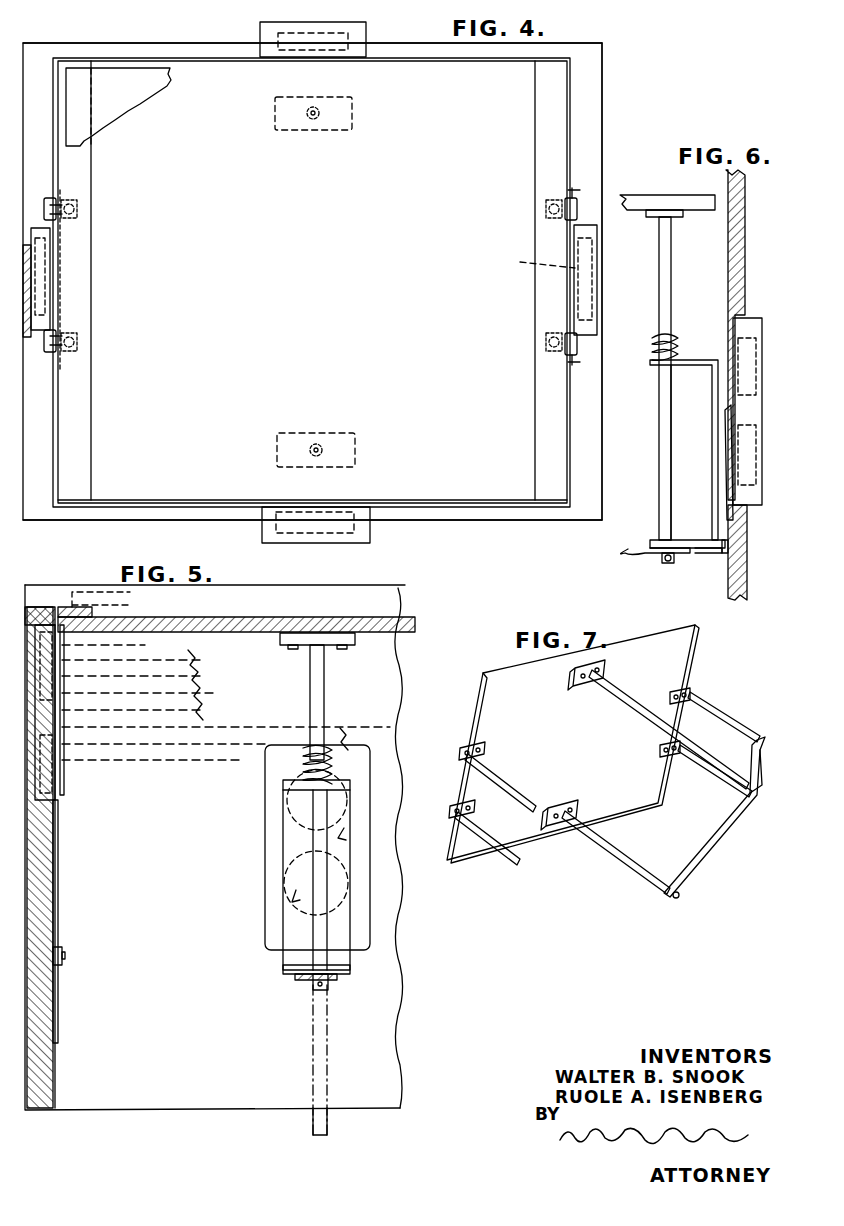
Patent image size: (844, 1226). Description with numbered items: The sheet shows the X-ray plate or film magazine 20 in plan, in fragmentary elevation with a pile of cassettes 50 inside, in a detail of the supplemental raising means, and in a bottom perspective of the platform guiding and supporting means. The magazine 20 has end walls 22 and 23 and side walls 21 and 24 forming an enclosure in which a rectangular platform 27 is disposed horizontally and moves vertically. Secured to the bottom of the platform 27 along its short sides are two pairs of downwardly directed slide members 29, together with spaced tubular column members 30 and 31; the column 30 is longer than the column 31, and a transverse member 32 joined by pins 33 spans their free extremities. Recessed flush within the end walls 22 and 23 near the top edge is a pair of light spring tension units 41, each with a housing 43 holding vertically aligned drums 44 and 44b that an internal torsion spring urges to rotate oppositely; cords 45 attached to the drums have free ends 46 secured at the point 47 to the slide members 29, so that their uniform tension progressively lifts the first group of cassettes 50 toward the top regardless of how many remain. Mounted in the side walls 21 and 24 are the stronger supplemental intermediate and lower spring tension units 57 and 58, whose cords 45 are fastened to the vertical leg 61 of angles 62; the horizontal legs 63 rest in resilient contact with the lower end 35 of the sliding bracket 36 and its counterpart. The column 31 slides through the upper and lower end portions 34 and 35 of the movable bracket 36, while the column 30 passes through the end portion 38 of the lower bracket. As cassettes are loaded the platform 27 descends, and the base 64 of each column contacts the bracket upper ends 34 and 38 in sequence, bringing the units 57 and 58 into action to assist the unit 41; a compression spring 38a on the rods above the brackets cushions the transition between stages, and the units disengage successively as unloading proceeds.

In FIG. 5, the photographic magazine 20 is at (418, 994).
In FIG. 4, the side wall 21 is at (207, 520).
In FIG. 6, the side wall 21 is at (742, 240).
In FIG. 4, the end wall 22 is at (40, 440).
In FIG. 5, the end wall 22 is at (55, 1090).
In FIG. 4, the end wall 23 is at (582, 450).
In FIG. 4, the side wall 24 is at (178, 47).
In FIG. 4, the platform 27 is at (345, 234).
In FIG. 6, the platform 27 is at (635, 202).
In FIG. 7, the platform 27 is at (682, 662).
In FIG. 5, the slide members 29 is at (58, 1010).
In FIG. 7, the slide members 29 is at (515, 800).
In FIG. 4, the tubular column member 30 is at (311, 120).
In FIG. 7, the tubular column member 30 is at (650, 715).
In FIG. 4, the tubular column member 31 is at (318, 443).
In FIG. 6, the tubular column member 31 is at (660, 470).
In FIG. 5, the tubular column member 31 is at (324, 705).
In FIG. 7, the tubular column member 31 is at (620, 858).
In FIG. 6, the transverse member 32 is at (640, 553).
In FIG. 7, the transverse member 32 is at (712, 843).
In FIG. 6, the pins 33 is at (666, 563).
In FIG. 7, the pins 33 is at (678, 897).
In FIG. 6, the upper end portion 34 is at (693, 360).
In FIG. 5, the upper end portion 34 is at (298, 790).
In FIG. 5, the lower end portion 35 is at (300, 982).
In FIG. 6, the movable bracket 36 is at (714, 432).
In FIG. 5, the movable bracket 36 is at (282, 850).
In FIG. 6, the end portion 38 is at (651, 343).
In FIG. 5, the compression spring 38a is at (332, 762).
In FIG. 4, the spring tension unit 41 is at (45, 320).
In FIG. 5, the spring tension unit 41 is at (62, 714).
In FIG. 4, the housing 43 is at (588, 250).
In FIG. 5, the housing 43 is at (58, 703).
In FIG. 4, the drum 44 is at (45, 256).
In FIG. 6, the drum 44 is at (764, 310).
In FIG. 5, the drum 44 is at (52, 655).
In FIG. 4, the slot 44b is at (577, 338).
In FIG. 6, the cords 45 is at (734, 522).
In FIG. 5, the cords 45 is at (285, 968).
In FIG. 5, the free ends 46 is at (58, 945).
In FIG. 5, the point 47 is at (65, 955).
In FIG. 4, the cassettes or film holders 50 is at (127, 101).
In FIG. 5, the cassettes or film holders 50 is at (180, 688).
In FIG. 4, the intermediate spring tension unit 57 is at (370, 532).
In FIG. 6, the intermediate spring tension unit 57 is at (766, 293).
In FIG. 5, the intermediate spring tension unit 57 is at (382, 805).
In FIG. 4, the lower spring tension unit 58 is at (366, 42).
In FIG. 5, the lower spring tension unit 58 is at (101, 599).
In FIG. 6, the vertical leg 61 is at (730, 548).
In FIG. 6, the angle 62 is at (735, 560).
In FIG. 6, the horizontal leg 63 is at (712, 553).
In FIG. 4, the base 64 is at (352, 113).
In FIG. 5, the base 64 is at (335, 650).
In FIG. 7, the base 64 is at (578, 684).